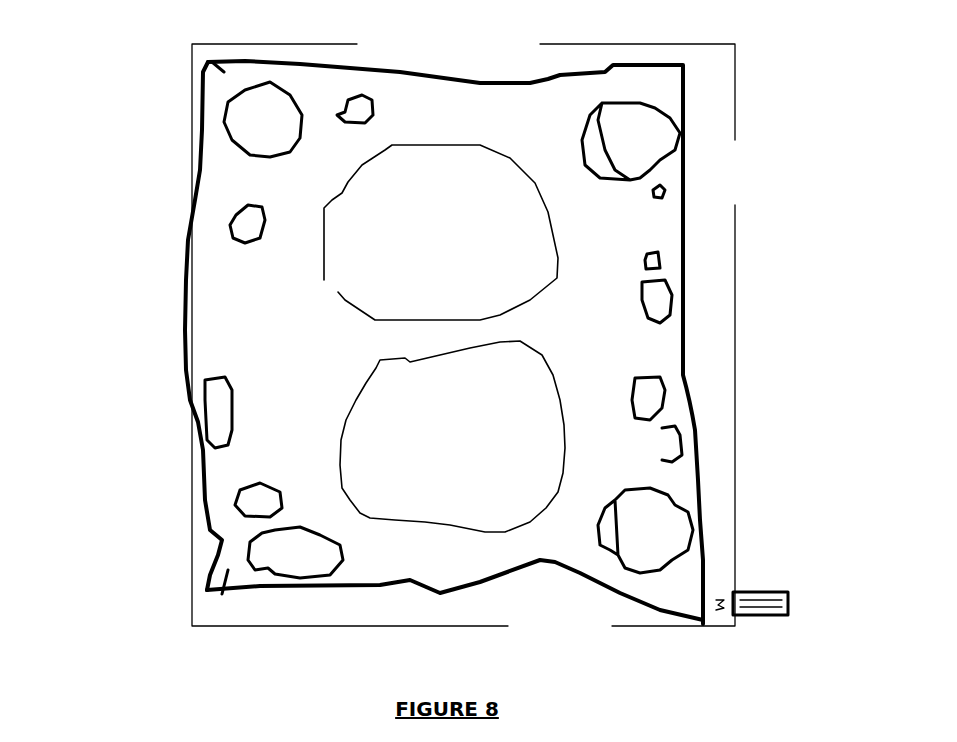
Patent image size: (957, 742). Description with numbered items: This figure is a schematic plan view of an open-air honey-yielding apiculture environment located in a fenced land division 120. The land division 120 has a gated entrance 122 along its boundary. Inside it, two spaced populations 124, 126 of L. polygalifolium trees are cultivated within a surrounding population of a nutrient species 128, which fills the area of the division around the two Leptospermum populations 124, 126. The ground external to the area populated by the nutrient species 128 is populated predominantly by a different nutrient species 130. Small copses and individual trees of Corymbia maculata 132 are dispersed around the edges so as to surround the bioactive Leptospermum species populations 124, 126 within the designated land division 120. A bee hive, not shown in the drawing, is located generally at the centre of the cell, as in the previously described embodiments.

The fenced land division 120 is at (166, 98).
The gated entrance 122 is at (780, 602).
The population of L. polygalifolium trees 124 is at (441, 232).
The population of L. polygalifolium trees 126 is at (452, 436).
The nutrient species 128 is at (444, 342).
The different nutrient species 130 is at (469, 336).
The Corymbia maculata 132 is at (449, 330).